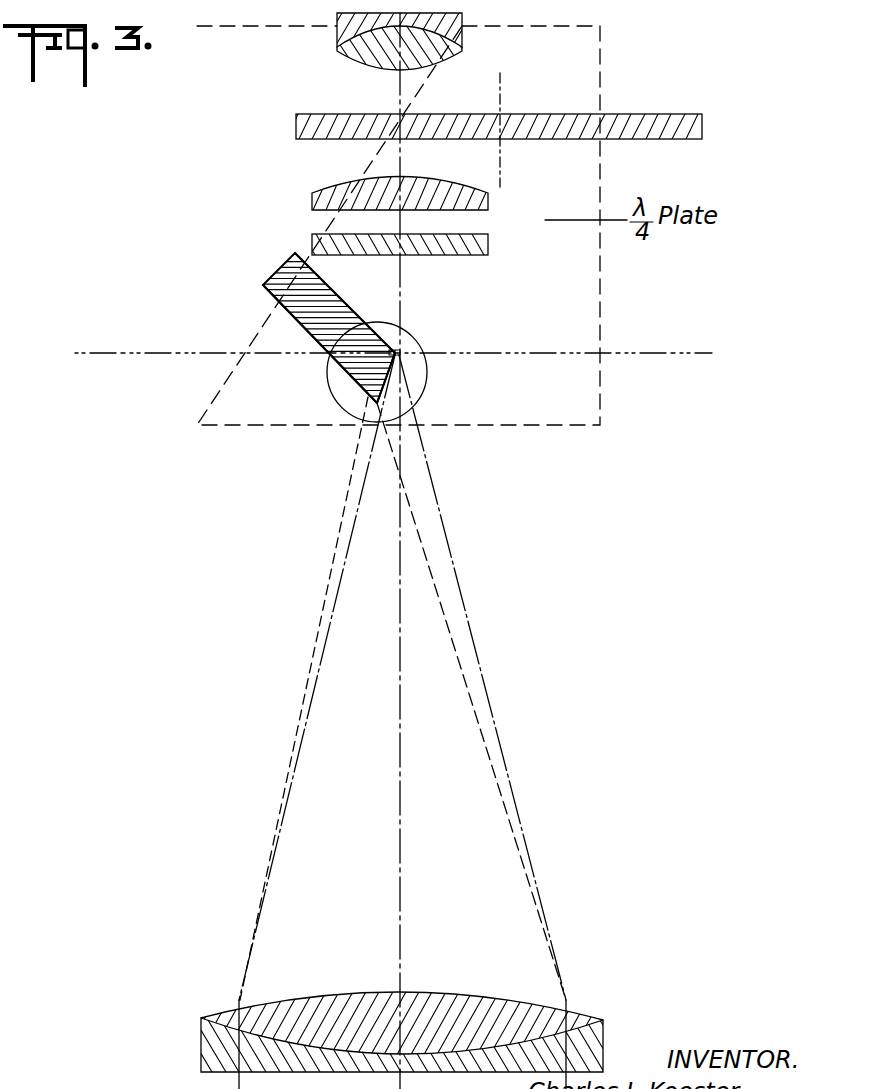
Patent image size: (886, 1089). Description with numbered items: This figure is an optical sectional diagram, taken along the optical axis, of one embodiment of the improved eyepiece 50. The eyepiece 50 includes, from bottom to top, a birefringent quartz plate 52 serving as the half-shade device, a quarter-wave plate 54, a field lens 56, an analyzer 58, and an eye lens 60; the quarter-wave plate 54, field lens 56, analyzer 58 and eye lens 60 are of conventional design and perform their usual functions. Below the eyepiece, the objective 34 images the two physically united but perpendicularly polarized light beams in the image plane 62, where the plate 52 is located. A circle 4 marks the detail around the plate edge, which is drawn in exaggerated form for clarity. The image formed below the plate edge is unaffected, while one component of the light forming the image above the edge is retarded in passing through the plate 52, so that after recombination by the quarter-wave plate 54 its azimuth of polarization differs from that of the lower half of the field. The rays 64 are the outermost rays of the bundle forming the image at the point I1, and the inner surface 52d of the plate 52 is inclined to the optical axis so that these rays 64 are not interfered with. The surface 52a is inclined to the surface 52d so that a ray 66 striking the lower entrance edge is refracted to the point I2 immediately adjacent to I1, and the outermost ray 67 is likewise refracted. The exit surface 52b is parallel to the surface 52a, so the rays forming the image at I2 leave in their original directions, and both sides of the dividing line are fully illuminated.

The eyepiece 50 is at (197, 164).
The eye lens 60 is at (338, 52).
The analyzer 58 is at (643, 114).
The field lens 56 is at (345, 182).
The quarter-wave plate 54 is at (488, 245).
The quartz plate 52 is at (281, 270).
The surface 52a is at (301, 327).
The surface 52b is at (352, 285).
The inner surface 52d is at (383, 391).
The detail circle 4 is at (328, 380).
The image point I1 is at (401, 352).
The image point I2 is at (396, 349).
The image plane 62 is at (108, 352).
The rays 64 is at (293, 780).
The ray 66 is at (459, 665).
The outermost ray 67 is at (320, 620).
The objective 34 is at (210, 1018).